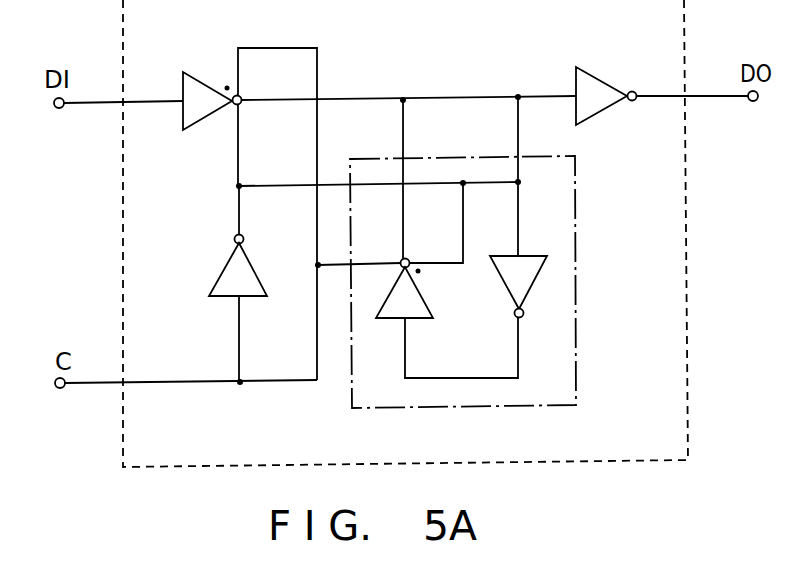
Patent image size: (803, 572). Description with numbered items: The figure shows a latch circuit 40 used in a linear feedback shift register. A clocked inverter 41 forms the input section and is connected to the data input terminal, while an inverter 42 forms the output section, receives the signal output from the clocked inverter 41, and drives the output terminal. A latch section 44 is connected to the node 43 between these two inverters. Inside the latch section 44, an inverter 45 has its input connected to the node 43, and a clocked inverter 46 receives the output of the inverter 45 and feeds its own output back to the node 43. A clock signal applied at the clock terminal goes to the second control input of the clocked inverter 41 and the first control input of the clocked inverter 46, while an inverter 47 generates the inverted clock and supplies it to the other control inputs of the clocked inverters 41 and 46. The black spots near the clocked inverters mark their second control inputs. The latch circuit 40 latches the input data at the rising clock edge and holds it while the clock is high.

The latch circuit 40 is at (576, 462).
The clocked inverter 41 is at (204, 84).
The inverter 42 is at (606, 84).
The node 43 is at (450, 97).
The latch section 44 is at (577, 215).
The inverter 45 is at (533, 283).
The clocked inverter 46 is at (424, 294).
The inverter 47 is at (224, 269).